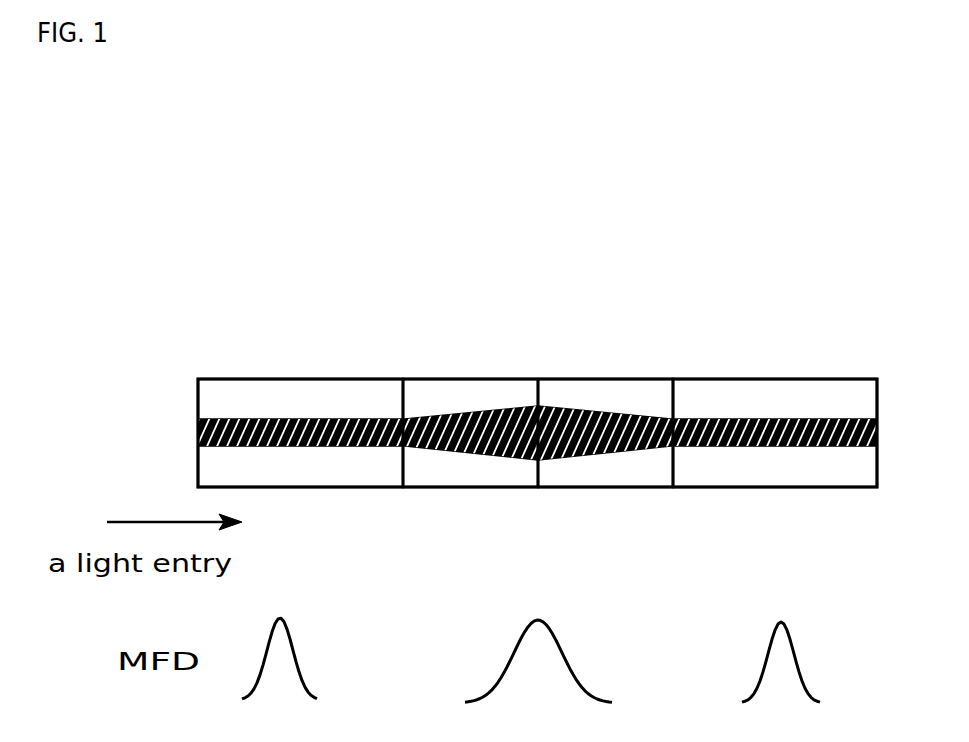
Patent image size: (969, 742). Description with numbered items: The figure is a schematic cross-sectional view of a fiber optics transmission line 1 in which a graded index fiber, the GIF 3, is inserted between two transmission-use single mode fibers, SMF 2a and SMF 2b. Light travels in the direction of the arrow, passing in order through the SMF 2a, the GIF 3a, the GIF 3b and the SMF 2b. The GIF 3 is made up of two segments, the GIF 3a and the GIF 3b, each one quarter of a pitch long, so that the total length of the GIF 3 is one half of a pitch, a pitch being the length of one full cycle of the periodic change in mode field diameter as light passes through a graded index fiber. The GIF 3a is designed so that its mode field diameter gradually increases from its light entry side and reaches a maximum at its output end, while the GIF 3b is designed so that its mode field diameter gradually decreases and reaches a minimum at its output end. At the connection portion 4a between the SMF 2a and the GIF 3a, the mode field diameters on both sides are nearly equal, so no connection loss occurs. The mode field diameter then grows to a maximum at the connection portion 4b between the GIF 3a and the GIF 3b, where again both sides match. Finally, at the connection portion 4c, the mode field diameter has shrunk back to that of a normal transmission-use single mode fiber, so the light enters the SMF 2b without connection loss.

The fiber optics transmission line 1 is at (658, 303).
The transmission-use single mode fiber 2a is at (252, 378).
The transmission-use single mode fiber 2b is at (775, 378).
The GIF 3 is at (538, 357).
The GIF 3a is at (513, 378).
The GIF 3b is at (557, 378).
The connection portion 4a is at (428, 448).
The connection portion 4b is at (563, 448).
The connection portion 4c is at (698, 448).